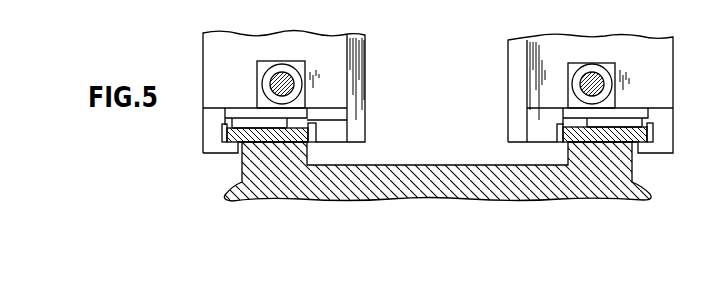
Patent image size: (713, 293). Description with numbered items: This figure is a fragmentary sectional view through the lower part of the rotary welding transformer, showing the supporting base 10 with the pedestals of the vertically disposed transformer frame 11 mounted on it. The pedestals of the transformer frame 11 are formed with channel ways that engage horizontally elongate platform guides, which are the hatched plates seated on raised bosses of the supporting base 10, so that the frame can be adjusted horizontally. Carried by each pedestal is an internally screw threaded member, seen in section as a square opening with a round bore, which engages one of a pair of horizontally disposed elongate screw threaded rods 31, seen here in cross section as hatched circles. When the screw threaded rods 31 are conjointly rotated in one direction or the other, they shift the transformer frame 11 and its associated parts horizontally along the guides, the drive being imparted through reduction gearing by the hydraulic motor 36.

The supporting base 10 is at (432, 170).
The transformer frame 11 is at (506, 102).
The screw threaded rods 31 is at (606, 83).
The hydraulic motor 36 is at (0, 10).